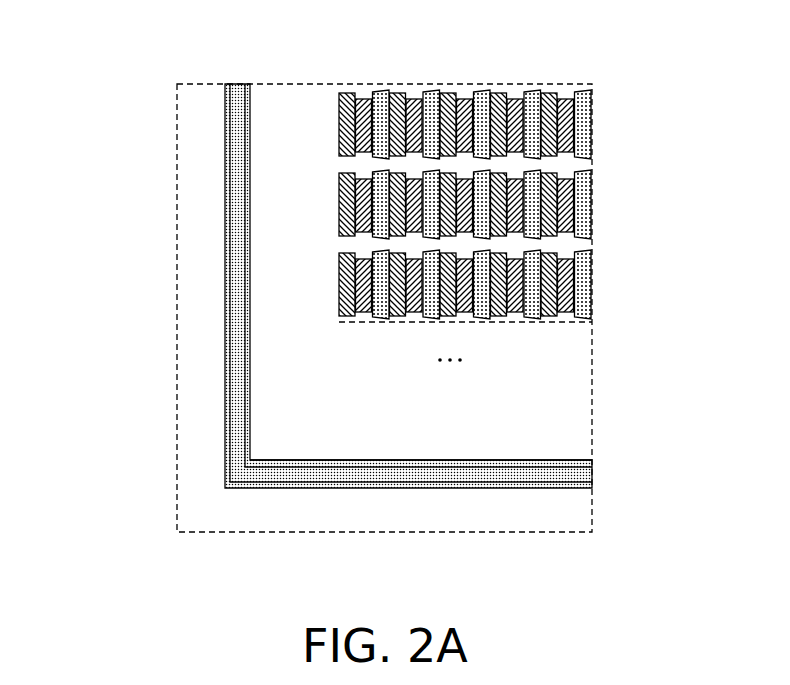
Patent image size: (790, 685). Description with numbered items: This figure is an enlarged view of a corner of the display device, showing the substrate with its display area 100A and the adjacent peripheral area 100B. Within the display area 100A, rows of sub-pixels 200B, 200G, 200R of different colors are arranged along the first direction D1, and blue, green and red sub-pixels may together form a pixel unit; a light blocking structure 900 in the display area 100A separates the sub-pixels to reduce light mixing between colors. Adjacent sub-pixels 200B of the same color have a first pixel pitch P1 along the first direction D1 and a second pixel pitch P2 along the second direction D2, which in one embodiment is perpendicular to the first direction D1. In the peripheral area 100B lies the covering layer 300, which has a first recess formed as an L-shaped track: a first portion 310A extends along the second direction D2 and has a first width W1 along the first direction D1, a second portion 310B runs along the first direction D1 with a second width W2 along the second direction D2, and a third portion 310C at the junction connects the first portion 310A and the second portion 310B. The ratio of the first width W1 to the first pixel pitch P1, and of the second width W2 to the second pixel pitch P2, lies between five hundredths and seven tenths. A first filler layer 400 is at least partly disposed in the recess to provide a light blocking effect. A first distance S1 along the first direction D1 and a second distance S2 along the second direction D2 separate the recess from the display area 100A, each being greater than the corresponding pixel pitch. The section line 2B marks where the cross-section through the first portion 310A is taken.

The display area 100A is at (558, 326).
The peripheral area 100B is at (384, 271).
The sub-pixels 200B is at (348, 238).
The sub-pixels 200R is at (362, 317).
The sub-pixels 200G is at (381, 318).
The covering layer 300 is at (307, 108).
The first portion 310A is at (450, 489).
The second portion 310B is at (228, 295).
The third portion 310C is at (247, 491).
The first filler layer 400 is at (567, 460).
The light blocking structure 900 is at (460, 238).
The first pixel pitch P1 is at (339, 235).
The second pixel pitch P2 is at (390, 89).
The first distance S1 is at (523, 323).
The second distance S2 is at (339, 135).
The first width W1 is at (392, 513).
The second width W2 is at (276, 149).
The first direction D1 is at (144, 302).
The second direction D2 is at (425, 608).
The region 2B is at (288, 502).